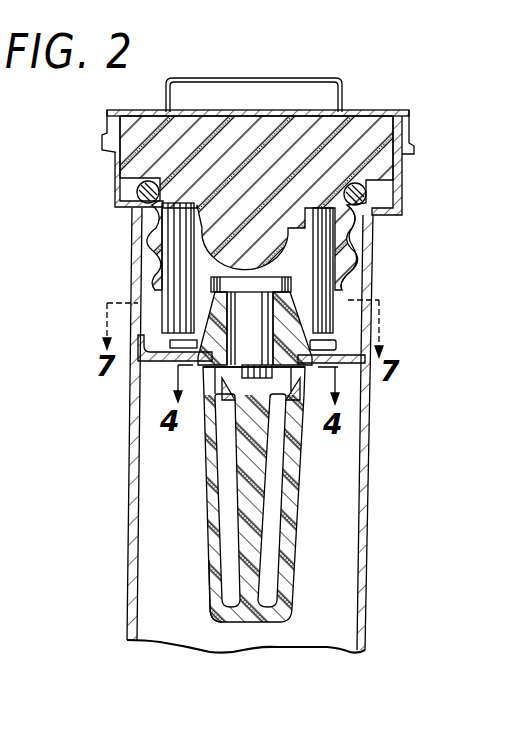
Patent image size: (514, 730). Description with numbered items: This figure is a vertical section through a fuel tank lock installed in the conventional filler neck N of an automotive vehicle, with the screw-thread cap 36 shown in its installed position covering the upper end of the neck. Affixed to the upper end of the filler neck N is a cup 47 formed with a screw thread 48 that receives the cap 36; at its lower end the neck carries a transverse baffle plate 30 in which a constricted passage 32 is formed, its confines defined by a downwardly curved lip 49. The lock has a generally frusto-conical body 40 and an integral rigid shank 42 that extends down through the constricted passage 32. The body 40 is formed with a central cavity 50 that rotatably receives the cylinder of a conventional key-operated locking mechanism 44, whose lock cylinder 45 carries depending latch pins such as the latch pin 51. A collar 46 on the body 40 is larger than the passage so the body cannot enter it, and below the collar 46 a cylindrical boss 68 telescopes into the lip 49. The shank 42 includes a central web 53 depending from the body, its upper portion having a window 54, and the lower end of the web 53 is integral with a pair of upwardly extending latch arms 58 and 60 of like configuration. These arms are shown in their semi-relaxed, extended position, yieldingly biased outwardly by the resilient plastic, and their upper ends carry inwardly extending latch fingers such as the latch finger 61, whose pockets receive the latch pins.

The filler neck N is at (130, 544).
The baffle plate 30 is at (152, 363).
The constricted passage 32 is at (292, 383).
The screw-thread cap 36 is at (345, 126).
The body 40 is at (310, 297).
The shank 42 is at (306, 550).
The key-operated locking mechanism 44 is at (283, 262).
The lock cylinder 45 is at (233, 320).
The collar 46 is at (345, 350).
The cup 47 is at (370, 261).
The screw thread 48 is at (368, 244).
The downwardly curved lip 49 is at (202, 366).
The central cavity 50 is at (243, 307).
The latch pin 51 is at (233, 408).
The central web 53 is at (250, 513).
The window 54 is at (258, 395).
The latch arm 58 is at (215, 578).
The latch arm 60 is at (292, 568).
The latch finger 61 is at (250, 418).
The cylindrical boss 68 is at (305, 373).